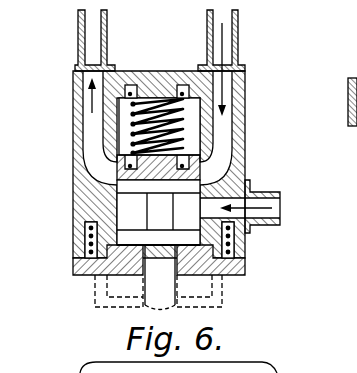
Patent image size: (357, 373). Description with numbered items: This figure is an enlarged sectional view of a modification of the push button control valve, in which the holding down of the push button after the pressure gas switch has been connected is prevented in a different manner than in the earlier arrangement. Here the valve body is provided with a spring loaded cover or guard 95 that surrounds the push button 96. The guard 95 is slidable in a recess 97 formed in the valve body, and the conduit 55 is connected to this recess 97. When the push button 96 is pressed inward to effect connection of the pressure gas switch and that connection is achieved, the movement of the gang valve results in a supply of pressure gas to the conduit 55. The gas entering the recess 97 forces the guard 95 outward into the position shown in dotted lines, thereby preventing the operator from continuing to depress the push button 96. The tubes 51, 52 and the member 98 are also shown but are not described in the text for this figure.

The inlet tube 51 is at (239, 54).
The outlet tube 52 is at (108, 39).
The conduit 55 is at (266, 193).
The spring loaded cover or guard 95 is at (212, 270).
The push button 96 is at (156, 286).
The recess 97 is at (85, 203).
The adjacent member 98 is at (350, 87).